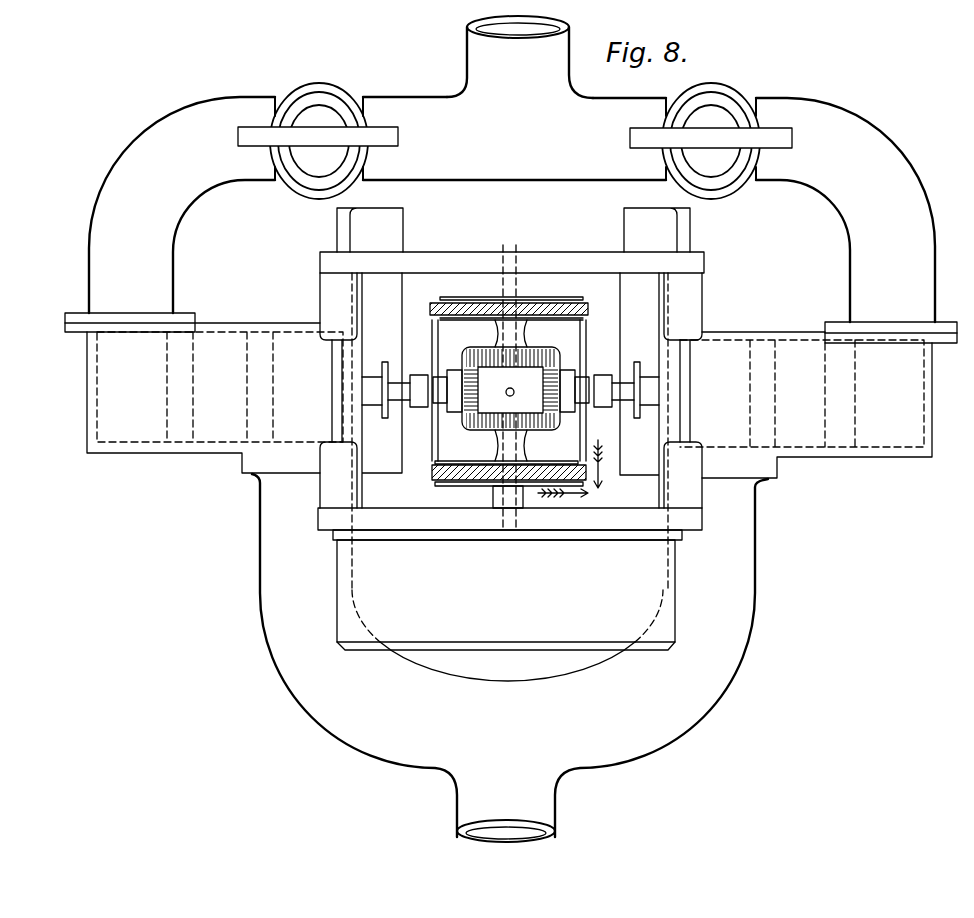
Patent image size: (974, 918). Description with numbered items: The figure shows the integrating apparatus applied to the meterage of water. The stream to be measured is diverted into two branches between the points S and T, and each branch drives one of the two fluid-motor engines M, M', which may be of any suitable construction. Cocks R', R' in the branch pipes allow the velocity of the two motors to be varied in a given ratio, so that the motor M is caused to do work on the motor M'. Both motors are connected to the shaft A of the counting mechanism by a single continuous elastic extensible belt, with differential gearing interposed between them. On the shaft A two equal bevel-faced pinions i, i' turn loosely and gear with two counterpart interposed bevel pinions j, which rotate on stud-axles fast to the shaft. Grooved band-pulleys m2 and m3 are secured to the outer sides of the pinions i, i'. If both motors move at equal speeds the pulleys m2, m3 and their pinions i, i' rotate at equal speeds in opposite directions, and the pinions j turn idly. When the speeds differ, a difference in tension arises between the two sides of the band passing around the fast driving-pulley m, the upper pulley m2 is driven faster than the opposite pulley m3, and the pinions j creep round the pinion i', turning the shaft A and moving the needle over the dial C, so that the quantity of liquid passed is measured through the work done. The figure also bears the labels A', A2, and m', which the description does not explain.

The diversion point S is at (520, 57).
The cock R' is at (515, 131).
The fluid-motor engine M is at (818, 401).
The fluid-motor engine M' is at (204, 393).
The reunion point T is at (510, 658).
The dial-plate C is at (506, 610).
The shaft or spindle A is at (508, 380).
The right shaft collar A' is at (638, 378).
The left shaft collar A2 is at (410, 403).
The fast driving-pulley m is at (521, 408).
The shaft bearing m' is at (511, 408).
The grooved pulley m2 is at (509, 482).
The grooved pulley m3 is at (509, 302).
The bevel-faced pinion i is at (511, 390).
The bevel-faced pinion i' is at (511, 374).
The interposed bevel-faced pinion j is at (460, 368).